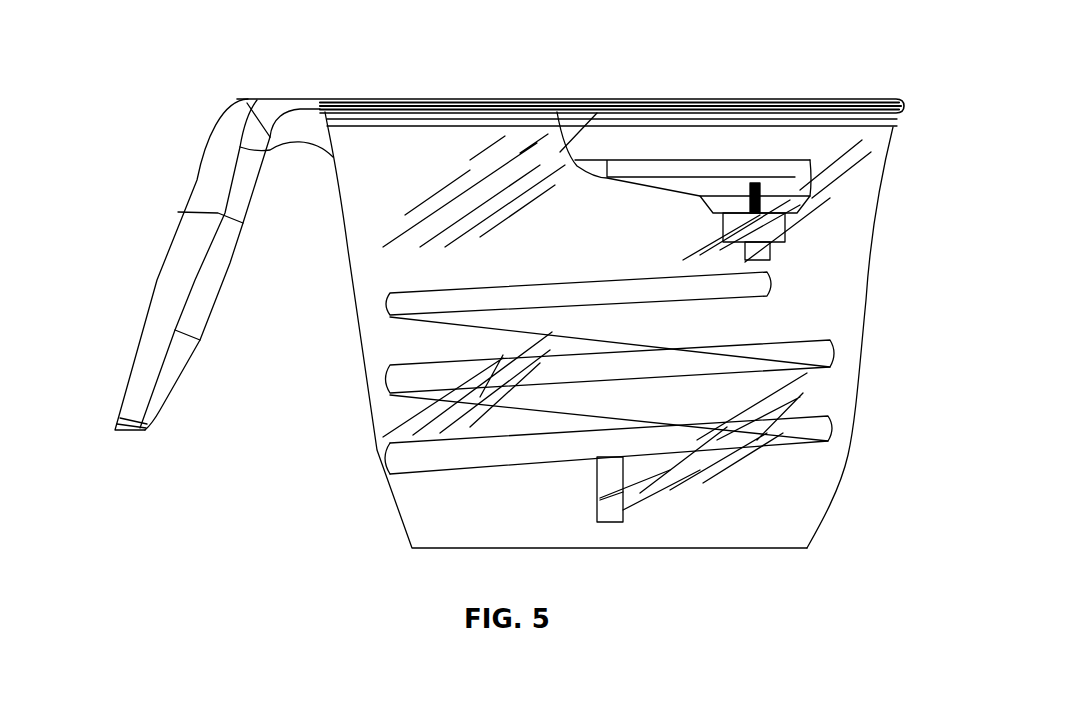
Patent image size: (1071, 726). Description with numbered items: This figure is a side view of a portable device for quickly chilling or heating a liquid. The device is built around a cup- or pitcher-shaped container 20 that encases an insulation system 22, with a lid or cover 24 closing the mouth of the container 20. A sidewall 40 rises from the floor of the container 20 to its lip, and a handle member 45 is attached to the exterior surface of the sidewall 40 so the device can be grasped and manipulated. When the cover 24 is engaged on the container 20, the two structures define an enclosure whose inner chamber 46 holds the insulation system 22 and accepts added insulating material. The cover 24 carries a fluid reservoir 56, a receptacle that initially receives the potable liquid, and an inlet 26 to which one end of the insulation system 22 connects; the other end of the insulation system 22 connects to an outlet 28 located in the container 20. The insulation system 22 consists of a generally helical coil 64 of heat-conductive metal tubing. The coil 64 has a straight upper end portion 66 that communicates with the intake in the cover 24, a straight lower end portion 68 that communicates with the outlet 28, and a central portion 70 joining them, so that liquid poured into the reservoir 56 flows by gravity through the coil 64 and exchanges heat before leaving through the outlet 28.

The container 20 is at (835, 312).
The insulation system 22 is at (420, 463).
The cover 24 is at (878, 93).
The inlet 26 is at (780, 253).
The outlet 28 is at (610, 523).
The sidewall 40 is at (841, 466).
The handle member 45 is at (163, 304).
The inner chamber 46 is at (430, 163).
The fluid reservoir 56 is at (833, 146).
The coil 64 is at (812, 422).
The upper end portion 66 is at (770, 260).
The lower end portion 68 is at (603, 505).
The central portion 70 is at (417, 380).